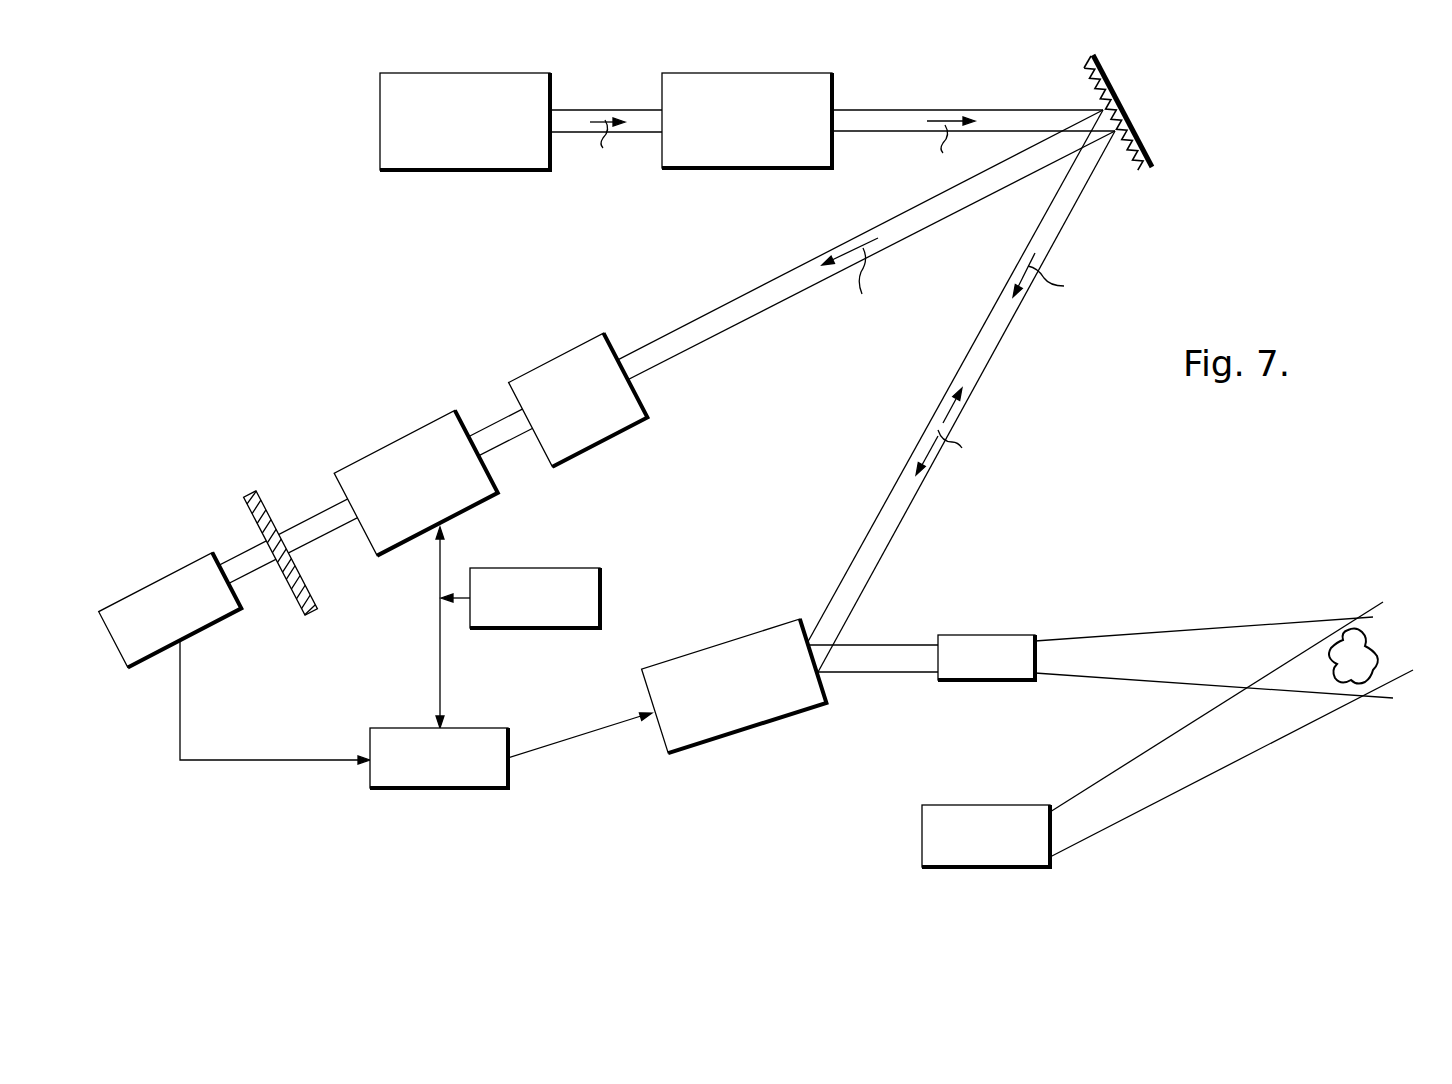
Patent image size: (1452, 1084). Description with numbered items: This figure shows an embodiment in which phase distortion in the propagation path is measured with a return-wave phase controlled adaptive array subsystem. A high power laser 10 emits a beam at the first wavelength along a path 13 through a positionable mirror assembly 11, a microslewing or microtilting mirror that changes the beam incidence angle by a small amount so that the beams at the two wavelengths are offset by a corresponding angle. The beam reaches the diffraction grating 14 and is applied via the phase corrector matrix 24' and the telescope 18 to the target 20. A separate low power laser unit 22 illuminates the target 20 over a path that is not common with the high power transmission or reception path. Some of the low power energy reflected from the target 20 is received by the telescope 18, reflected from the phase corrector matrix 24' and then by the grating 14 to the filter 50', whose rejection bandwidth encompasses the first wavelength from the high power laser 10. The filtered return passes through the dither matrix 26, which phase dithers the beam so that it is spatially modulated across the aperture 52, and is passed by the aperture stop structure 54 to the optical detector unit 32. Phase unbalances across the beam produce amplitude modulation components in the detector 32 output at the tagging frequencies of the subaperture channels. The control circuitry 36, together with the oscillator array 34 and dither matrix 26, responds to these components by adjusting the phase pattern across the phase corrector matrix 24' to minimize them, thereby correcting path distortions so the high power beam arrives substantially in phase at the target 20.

The high power laser 10 is at (378, 176).
The positionable mirror assembly 11 is at (835, 76).
The path 13 is at (1027, 110).
The diffraction grating 14 is at (1098, 76).
The filter 50' is at (580, 385).
The dither matrix 26 is at (437, 428).
The aperture stop structure 54 is at (250, 495).
The aperture 52 is at (293, 549).
The optical detector unit 32 is at (201, 562).
The oscillator array 34 is at (599, 569).
The control circuitry 36 is at (370, 791).
The phase corrector matrix 24' is at (732, 706).
The telescope 18 is at (1038, 634).
The laser unit 22 is at (925, 810).
The target 20 is at (1358, 678).